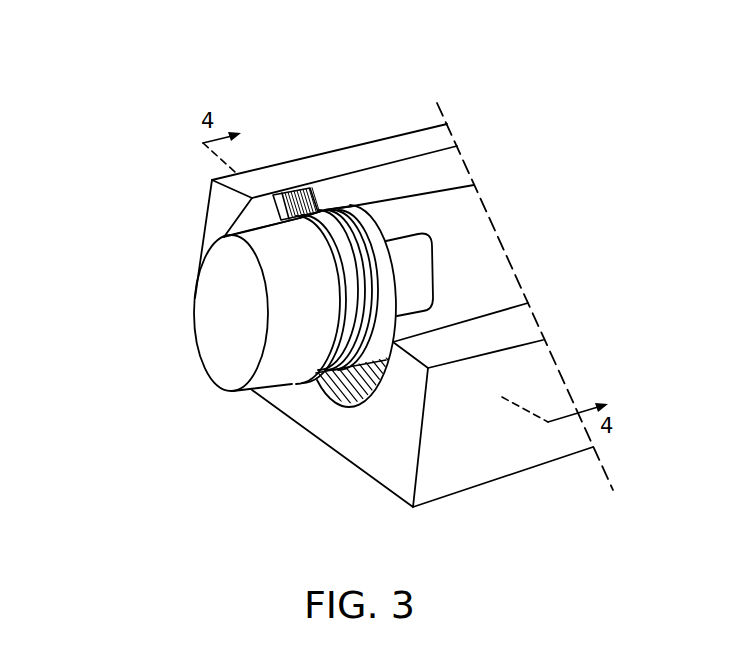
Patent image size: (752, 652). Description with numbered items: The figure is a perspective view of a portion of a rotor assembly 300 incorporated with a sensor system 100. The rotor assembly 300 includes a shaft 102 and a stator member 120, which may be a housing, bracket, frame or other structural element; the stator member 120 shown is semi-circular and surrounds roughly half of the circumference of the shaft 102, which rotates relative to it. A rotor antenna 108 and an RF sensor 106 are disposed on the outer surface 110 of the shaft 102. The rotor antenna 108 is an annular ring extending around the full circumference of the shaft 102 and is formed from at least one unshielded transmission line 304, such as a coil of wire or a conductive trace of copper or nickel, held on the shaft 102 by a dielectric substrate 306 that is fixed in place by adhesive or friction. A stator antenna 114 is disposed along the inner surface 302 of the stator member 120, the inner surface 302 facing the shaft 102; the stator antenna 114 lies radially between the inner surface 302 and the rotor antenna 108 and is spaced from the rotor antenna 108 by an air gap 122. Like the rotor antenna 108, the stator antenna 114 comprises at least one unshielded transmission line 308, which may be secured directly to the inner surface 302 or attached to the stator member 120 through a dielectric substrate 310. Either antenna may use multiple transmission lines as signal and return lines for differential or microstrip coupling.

The sensor system 100 is at (325, 206).
The shaft 102 is at (226, 265).
The RF sensor 106 is at (417, 278).
The rotor antenna 108 is at (349, 183).
The outer surface 110 is at (421, 222).
The stator antenna 114 is at (312, 197).
The stator member 120 is at (212, 192).
The air gap 122 is at (324, 402).
The rotor assembly 300 is at (162, 276).
The inner surface 302 is at (405, 177).
The unshielded transmission line 304 is at (367, 292).
The dielectric substrate 306 is at (335, 335).
The unshielded transmission line 308 is at (292, 197).
The dielectric substrate 310 is at (278, 197).